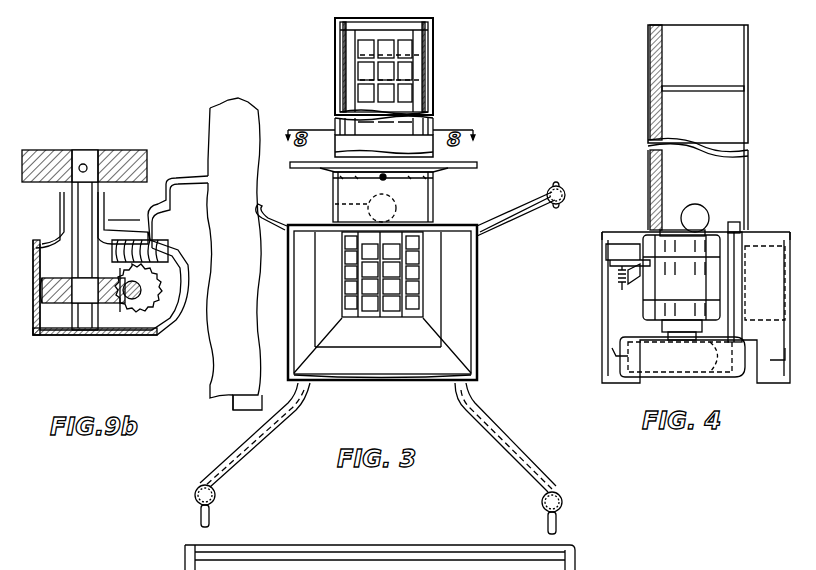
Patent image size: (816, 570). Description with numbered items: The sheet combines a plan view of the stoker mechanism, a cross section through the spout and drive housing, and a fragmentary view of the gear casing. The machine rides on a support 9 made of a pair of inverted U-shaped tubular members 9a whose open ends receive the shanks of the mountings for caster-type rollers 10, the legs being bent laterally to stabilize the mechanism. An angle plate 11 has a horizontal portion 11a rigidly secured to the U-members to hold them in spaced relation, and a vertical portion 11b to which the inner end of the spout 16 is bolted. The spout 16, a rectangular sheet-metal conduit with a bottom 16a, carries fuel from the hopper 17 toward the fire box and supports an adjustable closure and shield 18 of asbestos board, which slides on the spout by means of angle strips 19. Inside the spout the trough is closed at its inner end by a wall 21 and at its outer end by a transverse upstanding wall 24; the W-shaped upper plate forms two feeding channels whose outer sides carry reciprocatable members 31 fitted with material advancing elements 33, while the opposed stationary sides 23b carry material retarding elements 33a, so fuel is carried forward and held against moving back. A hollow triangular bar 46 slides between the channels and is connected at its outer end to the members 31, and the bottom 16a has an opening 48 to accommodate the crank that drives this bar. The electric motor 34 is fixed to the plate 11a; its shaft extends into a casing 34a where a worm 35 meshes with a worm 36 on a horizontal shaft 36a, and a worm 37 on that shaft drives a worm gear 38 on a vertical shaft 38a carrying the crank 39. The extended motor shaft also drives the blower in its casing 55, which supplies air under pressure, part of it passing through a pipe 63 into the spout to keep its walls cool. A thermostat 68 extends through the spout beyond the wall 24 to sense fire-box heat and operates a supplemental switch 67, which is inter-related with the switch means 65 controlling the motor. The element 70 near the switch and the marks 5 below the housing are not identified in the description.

In FIG. 9b, the crank 39 is at (72, 160).
In FIG. 9b, the vertical shaft 38a is at (76, 246).
In FIG. 9b, the worm 35 is at (138, 238).
In FIG. 9b, the worm 36 is at (150, 312).
In FIG. 9b, the horizontal shaft 36a is at (140, 298).
In FIG. 9b, the worm 37 is at (126, 310).
In FIG. 9b, the worm gear 38 is at (52, 318).
In FIG. 9b, the electric motor 34 is at (228, 112).
In FIG. 4, the electric motor 34 is at (720, 266).
In FIG. 9b, the casing 34a is at (190, 172).
In FIG. 3, the hollow bar 46 is at (393, 48).
In FIG. 3, the material retarding elements 33a is at (400, 78).
In FIG. 3, the material advancing elements 33 is at (418, 92).
In FIG. 3, the closure and shield 18 is at (462, 164).
In FIG. 3, the angle strips 19 is at (416, 178).
In FIG. 3, the spout 16 is at (350, 194).
In FIG. 4, the spout 16 is at (713, 127).
In FIG. 3, the opening 48 is at (334, 204).
In FIG. 4, the opening 48 is at (706, 204).
In FIG. 3, the hopper 17 is at (470, 306).
In FIG. 3, the reciprocatable members 31 is at (345, 285).
In FIG. 3, the wall 21 is at (370, 318).
In FIG. 3, the channel side 23b is at (392, 318).
In FIG. 3, the vertical portion of angle plate 11b is at (460, 226).
In FIG. 4, the vertical portion of angle plate 11b is at (628, 218).
In FIG. 3, the rollers 10 is at (558, 186).
In FIG. 3, the support 9 is at (360, 435).
In FIG. 3, the inverted U-shaped members 9a is at (524, 468).
In FIG. 4, the thermostat 68 is at (663, 66).
In FIG. 4, the transverse upstanding wall 24 is at (732, 86).
In FIG. 4, the spout bottom 16a is at (650, 110).
In FIG. 4, the pipe 63 is at (736, 222).
In FIG. 4, the angle plate 11 is at (677, 307).
In FIG. 4, the horizontal portion of angle plate 11a is at (606, 332).
In FIG. 4, the section line 5 is at (693, 350).
In FIG. 4, the supplemental switch 67 is at (606, 252).
In FIG. 4, the spring 70 is at (616, 282).
In FIG. 4, the switch means 65 is at (768, 312).
In FIG. 4, the blower casing 55 is at (702, 366).